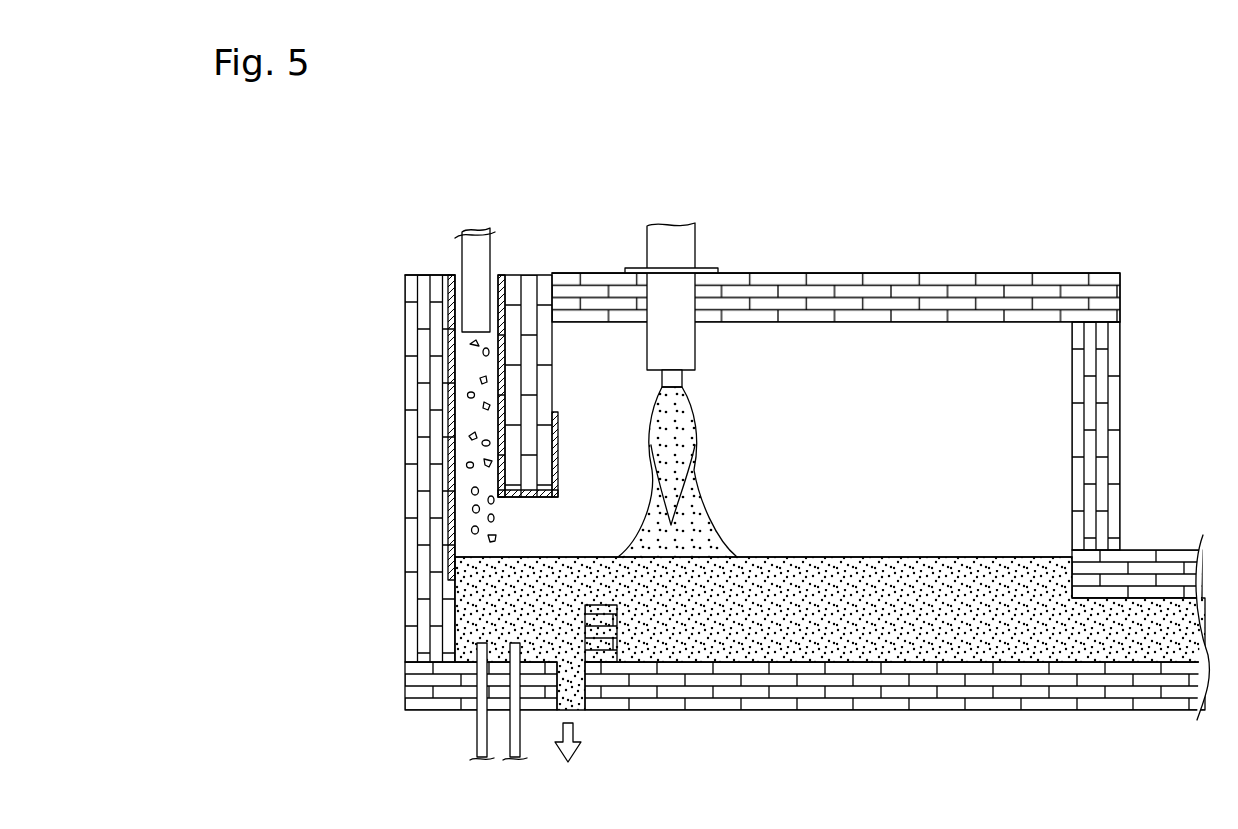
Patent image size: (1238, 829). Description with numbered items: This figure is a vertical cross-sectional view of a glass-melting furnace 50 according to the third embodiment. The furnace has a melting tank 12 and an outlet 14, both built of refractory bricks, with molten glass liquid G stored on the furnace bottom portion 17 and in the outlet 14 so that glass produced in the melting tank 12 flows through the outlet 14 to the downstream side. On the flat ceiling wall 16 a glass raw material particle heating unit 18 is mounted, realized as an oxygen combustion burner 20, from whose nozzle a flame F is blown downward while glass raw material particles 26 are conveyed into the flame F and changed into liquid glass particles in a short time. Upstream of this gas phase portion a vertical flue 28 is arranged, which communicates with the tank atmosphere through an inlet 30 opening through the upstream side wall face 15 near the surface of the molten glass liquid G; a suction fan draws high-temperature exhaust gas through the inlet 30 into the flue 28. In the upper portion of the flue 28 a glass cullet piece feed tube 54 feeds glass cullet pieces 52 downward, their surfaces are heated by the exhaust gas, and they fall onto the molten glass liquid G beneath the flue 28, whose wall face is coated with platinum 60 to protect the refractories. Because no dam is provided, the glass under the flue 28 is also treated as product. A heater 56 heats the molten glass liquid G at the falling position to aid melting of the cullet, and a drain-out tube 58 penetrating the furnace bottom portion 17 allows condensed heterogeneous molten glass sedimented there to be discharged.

The melting tank 12 is at (1122, 294).
The outlet 14 is at (1140, 552).
The upstream side wall face 15 is at (540, 383).
The ceiling wall 16 is at (888, 278).
The furnace bottom portion 17 is at (722, 692).
The glass raw material particle heating unit 18 is at (712, 234).
The oxygen combustion burner 20 is at (655, 240).
The glass raw material particles 26 is at (680, 440).
The flue 28 is at (454, 392).
The inlet 30 is at (543, 512).
The glass-melting furnace 50 is at (1048, 240).
The glass cullet pieces 52 is at (468, 348).
The glass cullet piece feed tube 54 is at (480, 240).
The heater 56 is at (512, 737).
The drain-out tube 58 is at (568, 700).
The platinum 60 is at (454, 368).
The flame F is at (689, 400).
The molten glass liquid G is at (793, 648).